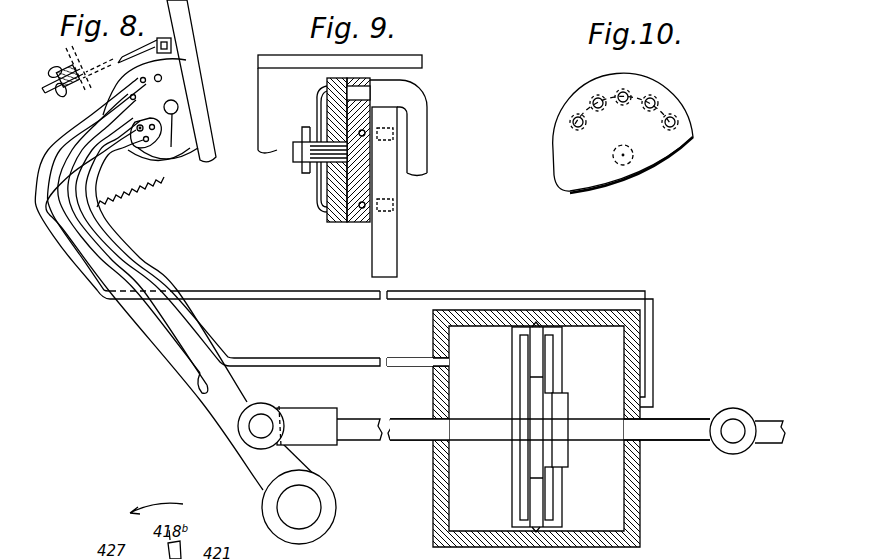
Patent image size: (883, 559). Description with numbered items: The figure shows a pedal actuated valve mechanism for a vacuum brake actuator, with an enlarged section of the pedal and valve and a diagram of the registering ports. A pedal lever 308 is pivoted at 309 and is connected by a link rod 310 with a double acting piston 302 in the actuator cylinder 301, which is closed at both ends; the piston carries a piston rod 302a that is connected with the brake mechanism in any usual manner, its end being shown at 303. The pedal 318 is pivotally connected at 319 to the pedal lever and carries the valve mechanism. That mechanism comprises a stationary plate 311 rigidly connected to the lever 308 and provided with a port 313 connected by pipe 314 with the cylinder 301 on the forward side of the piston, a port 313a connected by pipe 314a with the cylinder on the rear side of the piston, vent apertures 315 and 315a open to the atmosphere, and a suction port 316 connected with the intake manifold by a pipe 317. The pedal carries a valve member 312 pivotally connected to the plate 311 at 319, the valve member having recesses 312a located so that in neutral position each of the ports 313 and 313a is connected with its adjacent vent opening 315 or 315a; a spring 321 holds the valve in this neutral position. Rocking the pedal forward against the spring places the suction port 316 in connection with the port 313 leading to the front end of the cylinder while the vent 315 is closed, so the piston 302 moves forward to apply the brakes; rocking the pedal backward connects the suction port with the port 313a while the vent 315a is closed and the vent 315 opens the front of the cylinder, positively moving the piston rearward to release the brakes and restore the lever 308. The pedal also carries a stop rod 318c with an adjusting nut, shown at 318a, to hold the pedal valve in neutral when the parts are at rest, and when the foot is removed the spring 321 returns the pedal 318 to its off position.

In FIG. 8, the actuator cylinder 301 is at (580, 312).
In FIG. 8, the double acting piston 302 is at (528, 371).
In FIG. 8, the piston rod 302a is at (677, 422).
In FIG. 8, the rod eye connection 303 is at (762, 422).
In FIG. 8, the pedal lever 308 is at (237, 396).
In FIG. 8, the pivot 309 is at (314, 512).
In FIG. 8, the link rod 310 is at (364, 420).
In FIG. 8, the stationary plate 311 is at (178, 157).
In FIG. 9, the stationary plate 311 is at (360, 222).
In FIG. 10, the stationary plate 311 is at (560, 165).
In FIG. 9, the valve member 312 is at (334, 222).
In FIG. 9, the recesses 312a is at (327, 108).
In FIG. 10, the port 313 is at (656, 103).
In FIG. 10, the port 313a is at (593, 103).
In FIG. 8, the pipe 314 is at (362, 359).
In FIG. 8, the pipe 314a is at (483, 287).
In FIG. 8, the vent aperture 315 is at (162, 78).
In FIG. 10, the vent aperture 315 is at (676, 124).
In FIG. 8, the vent aperture 315a is at (140, 128).
In FIG. 10, the vent aperture 315a is at (573, 122).
In FIG. 9, the suction port 316 is at (360, 93).
In FIG. 10, the suction port 316 is at (628, 97).
In FIG. 8, the pipe 317 is at (199, 376).
In FIG. 9, the pipe 317 is at (427, 153).
In FIG. 8, the pedal 318 is at (196, 106).
In FIG. 9, the pedal 318 is at (267, 55).
In FIG. 8, the wing nut 318a is at (58, 93).
In FIG. 8, the stop rod 318c is at (111, 66).
In FIG. 8, the pivot 319 is at (151, 158).
In FIG. 9, the pivot 319 is at (297, 153).
In FIG. 8, the spring 321 is at (115, 195).
In FIG. 9, the spring 321 is at (317, 193).